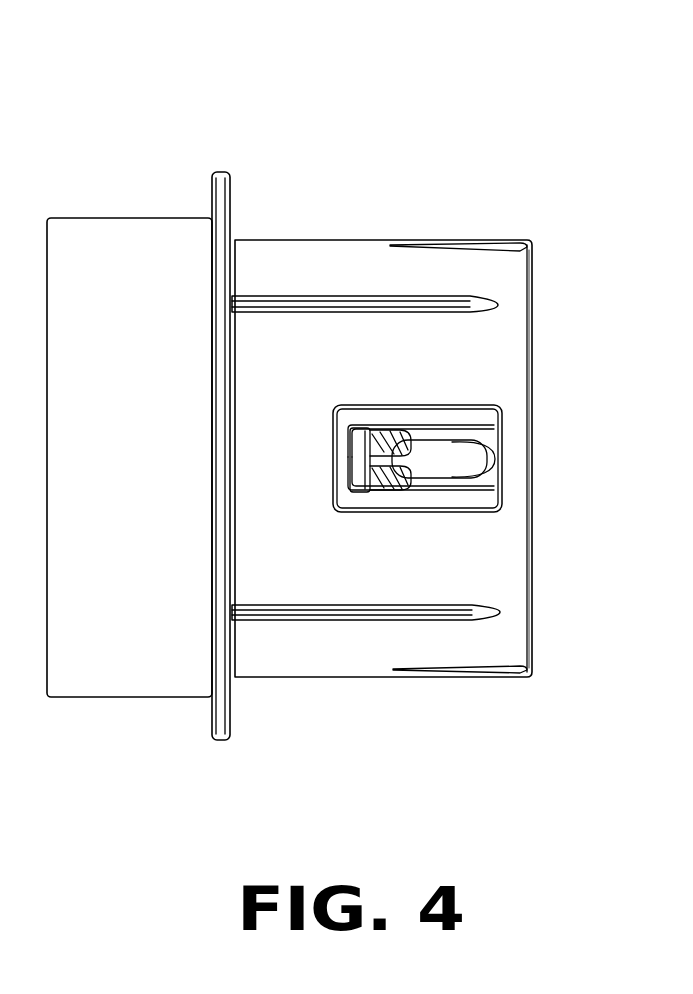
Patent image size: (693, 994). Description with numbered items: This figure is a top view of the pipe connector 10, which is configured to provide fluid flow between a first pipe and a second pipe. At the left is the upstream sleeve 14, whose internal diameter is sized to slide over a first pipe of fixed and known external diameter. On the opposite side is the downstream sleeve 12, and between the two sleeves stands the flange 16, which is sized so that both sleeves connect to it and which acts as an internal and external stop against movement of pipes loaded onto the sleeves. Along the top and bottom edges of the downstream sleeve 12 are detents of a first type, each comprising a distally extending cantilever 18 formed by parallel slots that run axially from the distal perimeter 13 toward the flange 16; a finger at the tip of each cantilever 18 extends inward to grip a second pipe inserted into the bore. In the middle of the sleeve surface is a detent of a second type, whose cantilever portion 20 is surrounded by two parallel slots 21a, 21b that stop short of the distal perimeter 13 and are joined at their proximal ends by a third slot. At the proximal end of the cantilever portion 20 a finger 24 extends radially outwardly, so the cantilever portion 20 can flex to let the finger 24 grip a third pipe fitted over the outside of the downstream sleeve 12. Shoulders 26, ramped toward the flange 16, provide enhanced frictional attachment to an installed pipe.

The pipe connector 10 is at (405, 100).
The downstream sleeve 12 is at (278, 260).
The distal perimeter 13 is at (531, 622).
The upstream sleeve 14 is at (102, 247).
The flange 16 is at (228, 187).
The cantilever 18 is at (466, 240).
The cantilever portion 20 is at (490, 461).
The slot 21a is at (426, 414).
The slot 21b is at (474, 498).
The finger 24 is at (373, 490).
The shoulder 26 is at (350, 308).